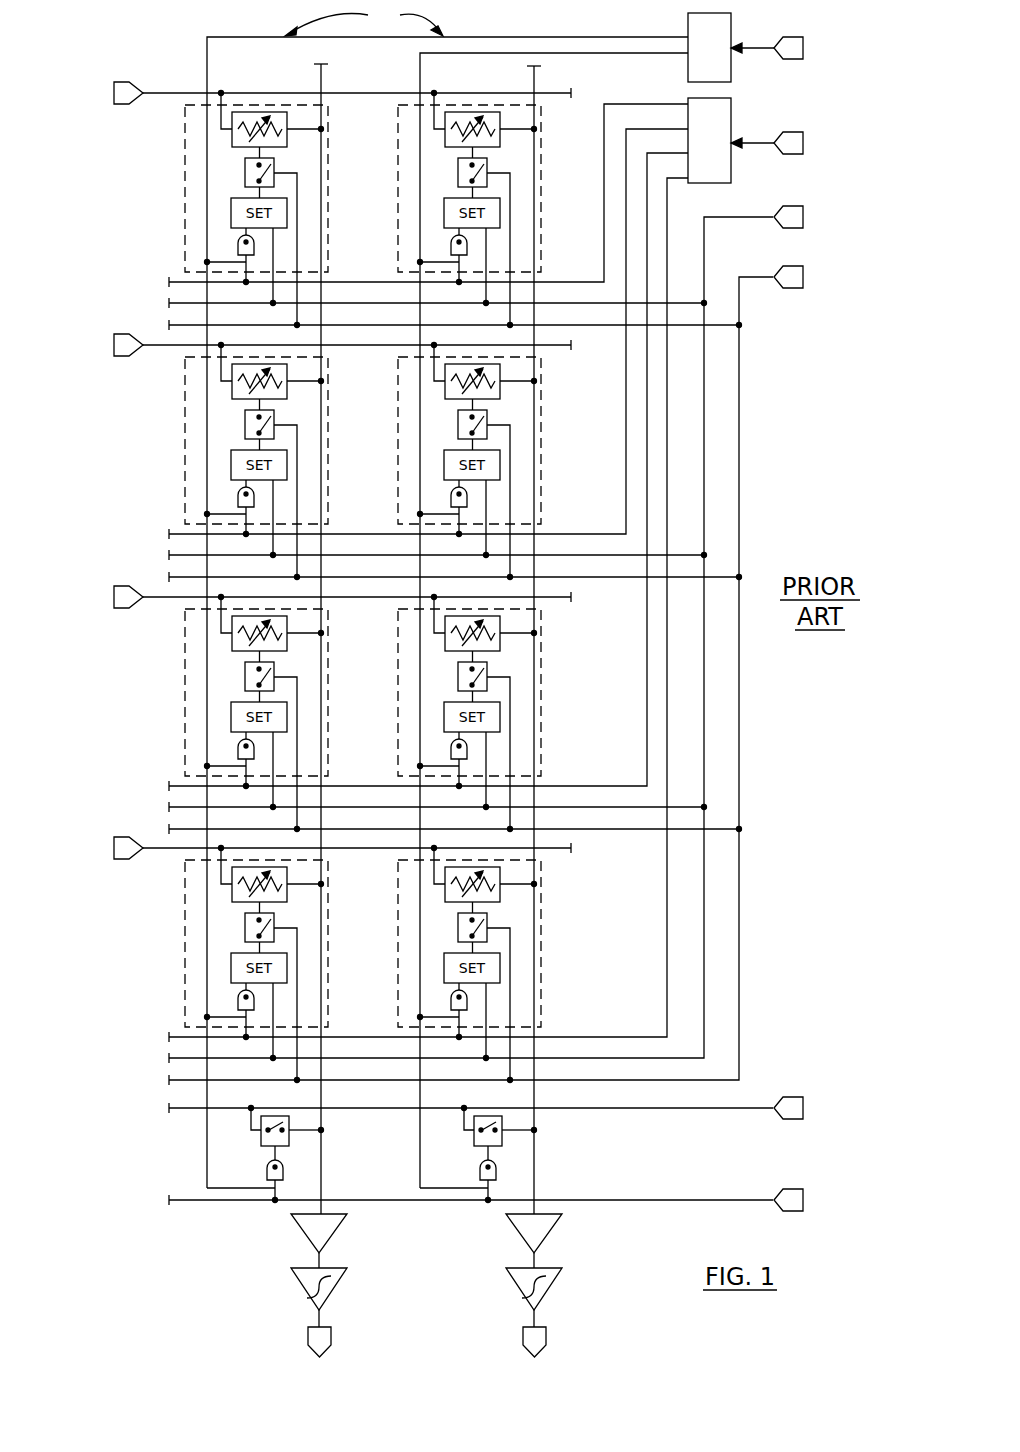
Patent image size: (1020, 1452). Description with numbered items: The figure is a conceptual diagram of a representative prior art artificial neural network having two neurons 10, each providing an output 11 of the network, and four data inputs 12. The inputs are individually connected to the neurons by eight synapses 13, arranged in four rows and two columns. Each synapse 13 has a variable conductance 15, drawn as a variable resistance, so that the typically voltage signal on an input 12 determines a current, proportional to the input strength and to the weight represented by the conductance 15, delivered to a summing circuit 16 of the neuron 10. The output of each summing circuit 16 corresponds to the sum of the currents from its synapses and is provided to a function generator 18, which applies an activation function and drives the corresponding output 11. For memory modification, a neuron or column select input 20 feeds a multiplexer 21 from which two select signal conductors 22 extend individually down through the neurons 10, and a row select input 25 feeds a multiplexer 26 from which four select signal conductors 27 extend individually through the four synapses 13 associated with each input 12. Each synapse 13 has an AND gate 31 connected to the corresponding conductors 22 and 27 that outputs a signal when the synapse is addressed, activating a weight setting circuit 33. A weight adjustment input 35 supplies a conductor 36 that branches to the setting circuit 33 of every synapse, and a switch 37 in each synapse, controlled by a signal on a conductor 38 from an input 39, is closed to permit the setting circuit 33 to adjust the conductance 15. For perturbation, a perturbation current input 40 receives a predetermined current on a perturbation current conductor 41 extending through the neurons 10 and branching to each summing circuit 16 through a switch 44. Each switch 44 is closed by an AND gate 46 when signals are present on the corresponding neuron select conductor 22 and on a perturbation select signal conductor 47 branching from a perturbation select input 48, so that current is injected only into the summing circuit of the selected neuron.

The neuron 10 is at (364, 21).
The output 11 is at (328, 1332).
The data input 12 is at (118, 101).
The synapse 13 is at (390, 147).
The variable conductance 15 is at (247, 112).
The summing circuit 16 is at (508, 1225).
The function generator 18 is at (508, 1278).
The neuron or column select input 20 is at (803, 48).
The multiplexer 21 is at (731, 26).
The select signal conductor 22 is at (208, 57).
The input or row select input 25 is at (790, 138).
The multiplexer 26 is at (724, 168).
The select signal conductor 27 is at (647, 290).
The AND gate 31 is at (238, 247).
The weight setting circuit 33 is at (231, 212).
The weight adjustment input 35 is at (800, 212).
The conductor 36 is at (258, 303).
The switch 37 is at (275, 167).
The conductor 38 is at (268, 325).
The input 39 is at (796, 282).
The perturbation current input 40 is at (800, 1106).
The perturbation current conductor 41 is at (232, 1108).
The switch 44 is at (262, 1138).
The AND gate 46 is at (267, 1169).
The perturbation select signal conductor 47 is at (495, 1190).
The perturbation select input 48 is at (795, 1196).